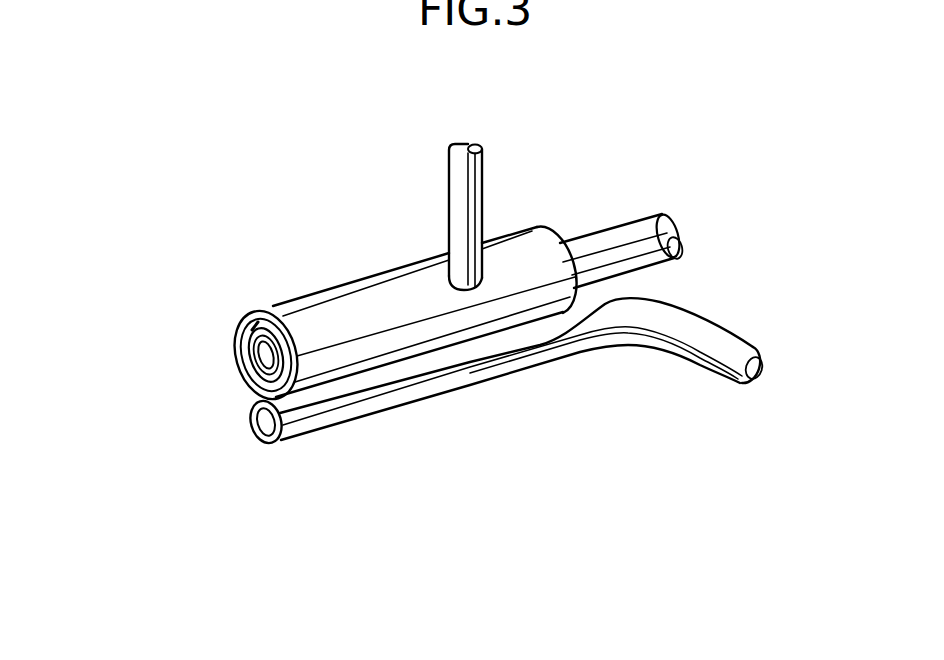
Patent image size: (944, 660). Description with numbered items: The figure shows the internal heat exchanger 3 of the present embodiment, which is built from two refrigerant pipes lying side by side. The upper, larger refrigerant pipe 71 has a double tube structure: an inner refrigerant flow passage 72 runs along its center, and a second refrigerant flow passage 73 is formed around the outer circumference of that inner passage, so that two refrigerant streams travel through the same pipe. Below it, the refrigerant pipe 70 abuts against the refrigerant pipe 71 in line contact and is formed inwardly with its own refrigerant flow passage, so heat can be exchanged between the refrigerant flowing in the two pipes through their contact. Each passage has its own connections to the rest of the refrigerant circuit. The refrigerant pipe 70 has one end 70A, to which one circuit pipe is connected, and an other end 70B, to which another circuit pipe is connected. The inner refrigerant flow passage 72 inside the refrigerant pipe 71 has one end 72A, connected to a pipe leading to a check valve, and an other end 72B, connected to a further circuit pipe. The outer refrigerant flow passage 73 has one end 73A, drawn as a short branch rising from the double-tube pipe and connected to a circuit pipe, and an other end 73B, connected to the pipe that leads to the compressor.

The internal heat exchanger 3 is at (383, 481).
The refrigerant pipe 70 is at (490, 353).
The one end of the refrigerant pipe 70A is at (748, 362).
The other end of the refrigerant pipe 70B is at (261, 443).
The refrigerant pipe 71 is at (399, 261).
The refrigerant flow passage 72 is at (261, 365).
The one end of the refrigerant flow passage 72A is at (672, 223).
The other end of the refrigerant flow passage 72B is at (262, 350).
The refrigerant flow passage 73 is at (262, 326).
The one end of the refrigerant flow passage 73A is at (477, 146).
The other end of the refrigerant flow passage 73B is at (249, 318).